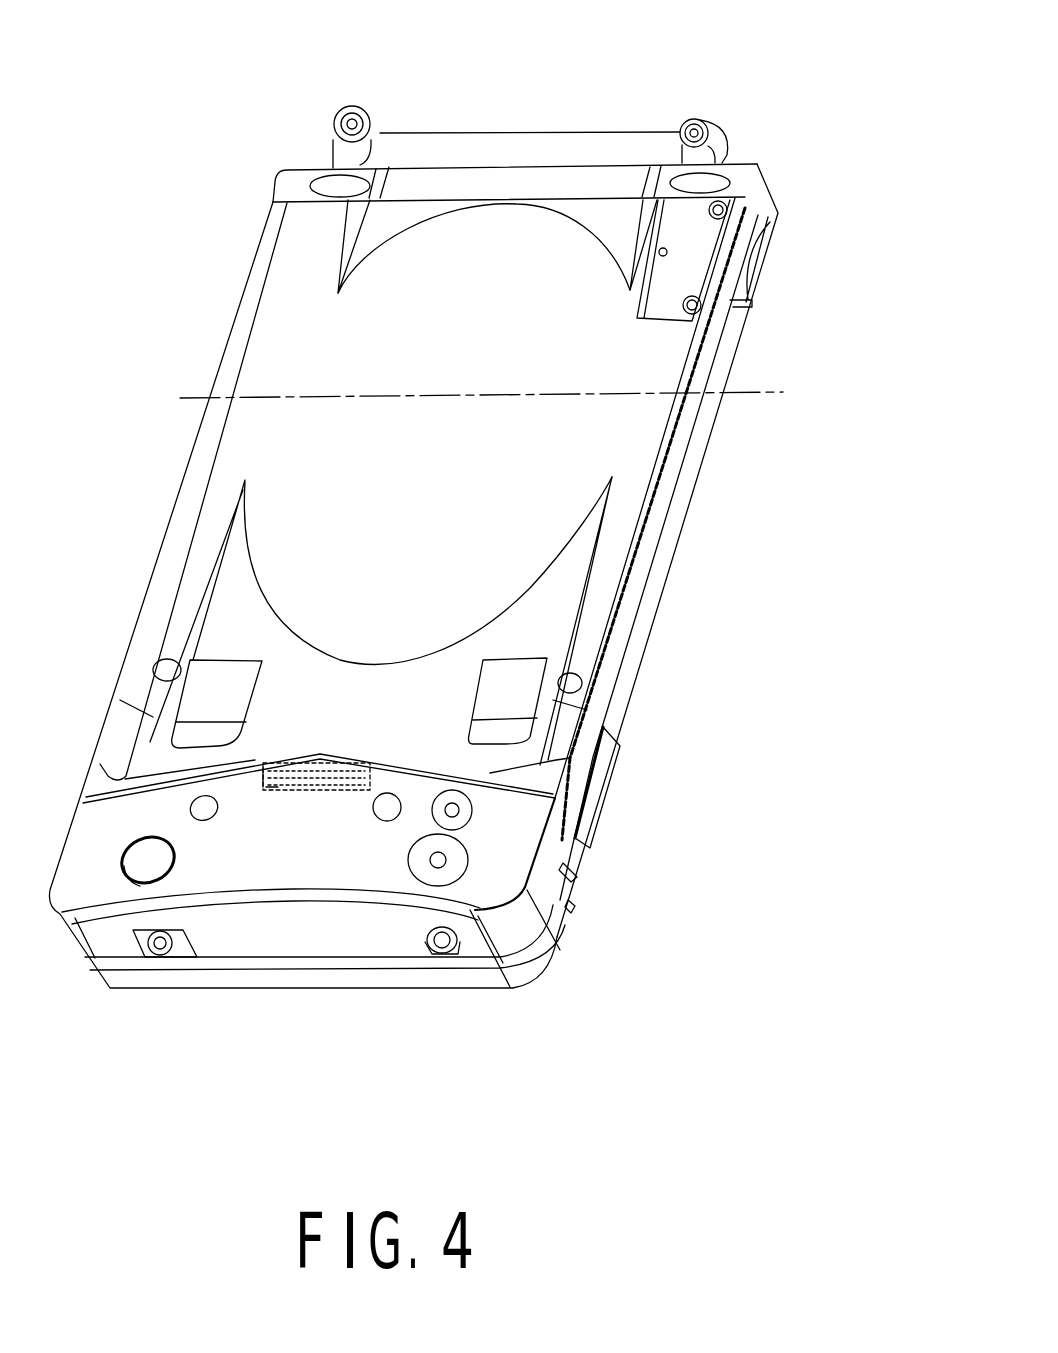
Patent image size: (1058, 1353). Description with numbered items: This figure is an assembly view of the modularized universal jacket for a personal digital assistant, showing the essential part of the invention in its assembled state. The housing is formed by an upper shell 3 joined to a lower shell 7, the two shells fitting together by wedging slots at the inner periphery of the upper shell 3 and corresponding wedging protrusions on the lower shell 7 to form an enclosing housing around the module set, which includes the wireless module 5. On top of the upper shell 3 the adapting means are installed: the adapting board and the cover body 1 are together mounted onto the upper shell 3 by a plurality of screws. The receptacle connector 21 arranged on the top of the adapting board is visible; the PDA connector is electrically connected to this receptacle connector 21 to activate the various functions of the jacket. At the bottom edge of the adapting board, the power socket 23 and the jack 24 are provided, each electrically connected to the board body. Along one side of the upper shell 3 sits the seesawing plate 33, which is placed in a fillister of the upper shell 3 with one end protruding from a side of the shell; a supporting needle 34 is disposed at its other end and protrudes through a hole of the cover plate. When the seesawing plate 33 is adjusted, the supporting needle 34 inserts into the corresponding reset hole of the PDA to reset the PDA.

The cover body 1 is at (545, 873).
The upper shell 3 is at (652, 543).
The wireless module 5 is at (783, 393).
The lower shell 7 is at (642, 627).
The receptacle connector 21 is at (303, 790).
The power socket 23 is at (153, 957).
The jack 24 is at (443, 945).
The seesawing plate 33 is at (777, 213).
The supporting needle 34 is at (660, 250).